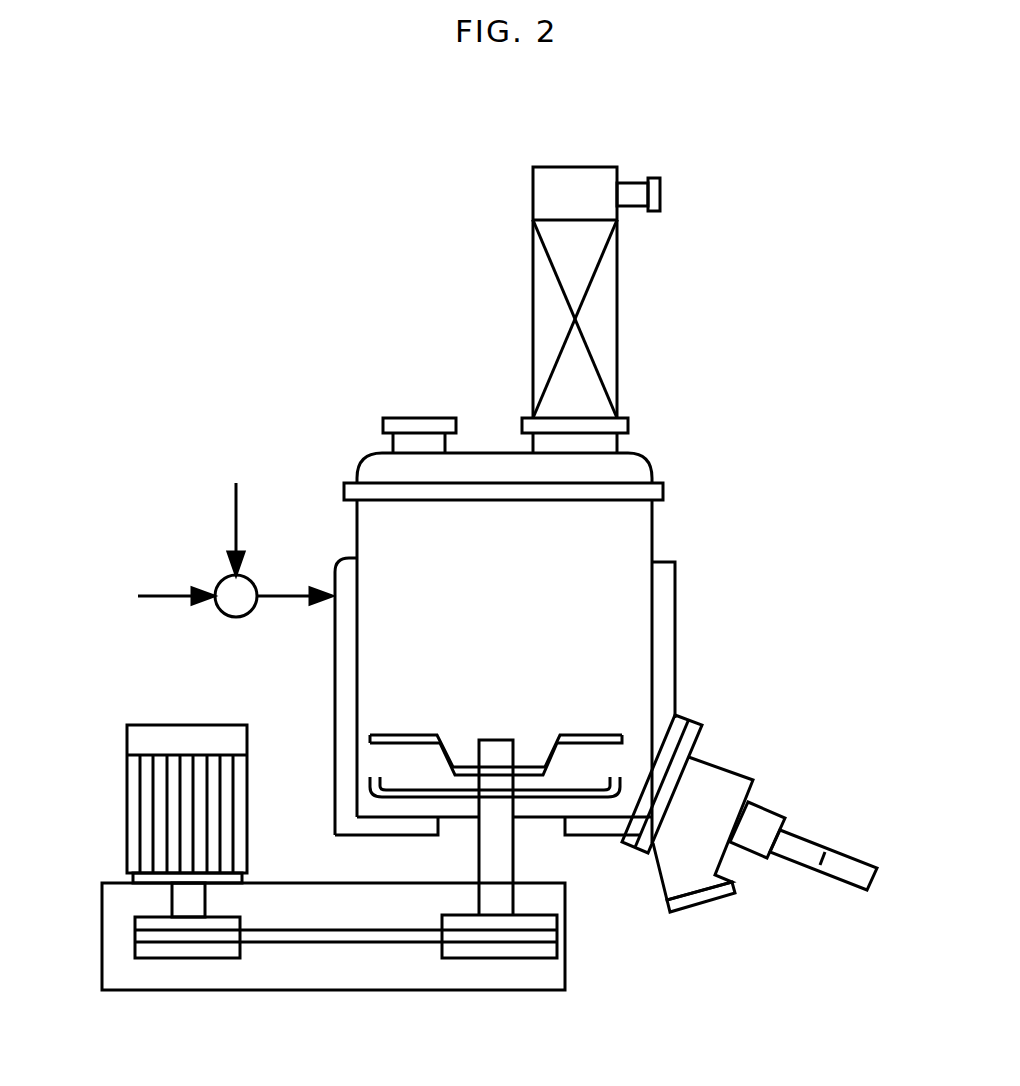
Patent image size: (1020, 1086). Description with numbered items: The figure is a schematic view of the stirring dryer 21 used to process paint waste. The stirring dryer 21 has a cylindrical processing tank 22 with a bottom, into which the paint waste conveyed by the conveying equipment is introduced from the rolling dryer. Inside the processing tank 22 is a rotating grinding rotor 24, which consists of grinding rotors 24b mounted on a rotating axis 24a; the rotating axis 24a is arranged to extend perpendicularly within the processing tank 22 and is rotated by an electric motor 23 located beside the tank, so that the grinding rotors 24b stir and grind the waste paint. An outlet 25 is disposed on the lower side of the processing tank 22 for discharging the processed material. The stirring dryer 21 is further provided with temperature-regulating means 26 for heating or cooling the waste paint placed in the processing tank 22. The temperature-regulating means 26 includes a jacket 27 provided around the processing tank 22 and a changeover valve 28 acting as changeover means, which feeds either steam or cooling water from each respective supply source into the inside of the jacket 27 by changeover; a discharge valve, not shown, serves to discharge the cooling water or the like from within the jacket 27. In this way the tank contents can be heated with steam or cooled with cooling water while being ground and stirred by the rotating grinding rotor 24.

The stirring dryer 21 is at (407, 337).
The processing tank 22 is at (653, 522).
The electric motor 23 is at (126, 742).
The rotating grinding rotor 24 is at (456, 835).
The rotating axis 24a is at (514, 855).
The grinding rotors 24b is at (587, 735).
The outlet 25 is at (670, 885).
The temperature-regulating means 26 is at (199, 630).
The jacket 27 is at (342, 694).
The changeover valve 28 is at (250, 578).